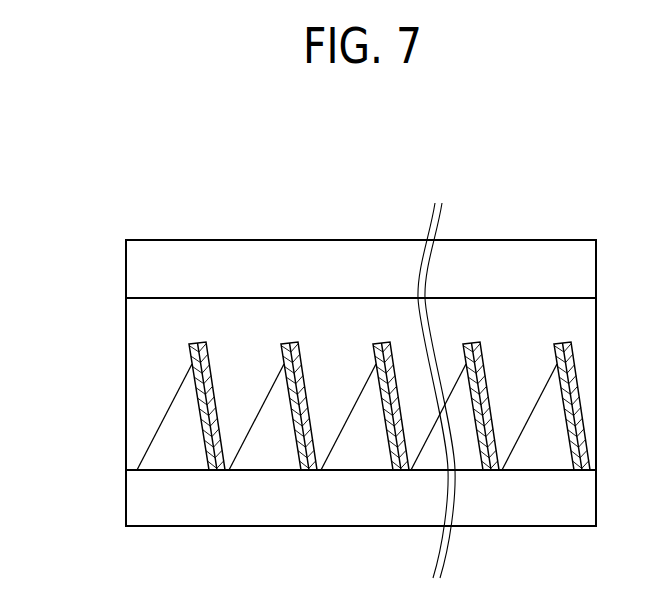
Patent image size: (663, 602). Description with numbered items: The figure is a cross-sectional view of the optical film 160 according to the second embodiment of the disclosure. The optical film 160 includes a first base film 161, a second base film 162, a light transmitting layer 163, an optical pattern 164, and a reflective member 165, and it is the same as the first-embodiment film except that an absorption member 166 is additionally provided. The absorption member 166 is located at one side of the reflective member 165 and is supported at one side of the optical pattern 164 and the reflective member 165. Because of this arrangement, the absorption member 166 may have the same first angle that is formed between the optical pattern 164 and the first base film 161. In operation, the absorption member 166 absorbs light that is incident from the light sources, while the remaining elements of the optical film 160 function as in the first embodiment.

The optical film 160 is at (83, 202).
The first base film 161 is at (140, 490).
The second base film 162 is at (140, 270).
The light transmitting layer 163 is at (140, 323).
The optical pattern 164 is at (172, 452).
The reflective member 165 is at (197, 407).
The absorption member 166 is at (192, 366).